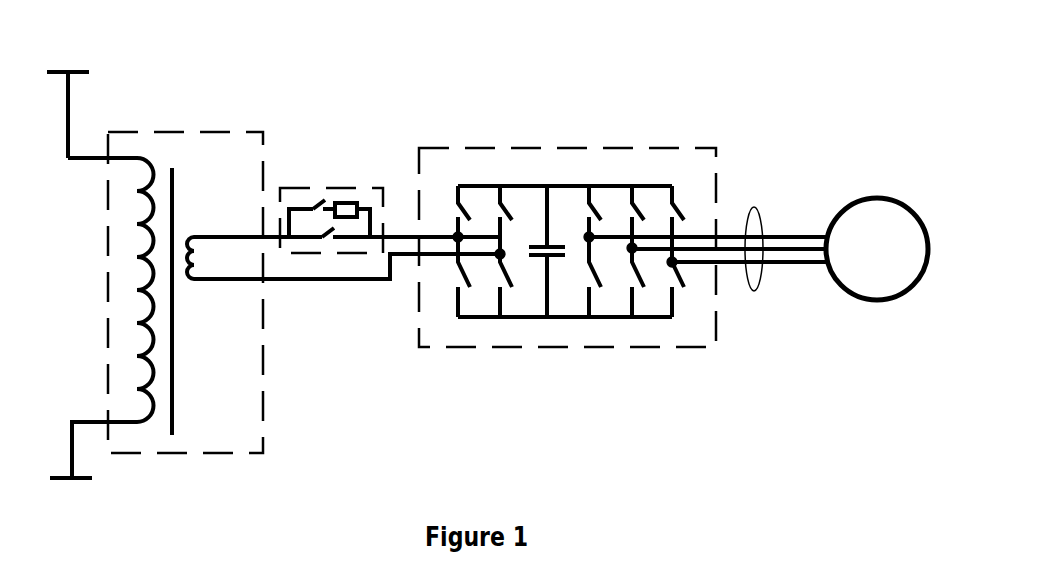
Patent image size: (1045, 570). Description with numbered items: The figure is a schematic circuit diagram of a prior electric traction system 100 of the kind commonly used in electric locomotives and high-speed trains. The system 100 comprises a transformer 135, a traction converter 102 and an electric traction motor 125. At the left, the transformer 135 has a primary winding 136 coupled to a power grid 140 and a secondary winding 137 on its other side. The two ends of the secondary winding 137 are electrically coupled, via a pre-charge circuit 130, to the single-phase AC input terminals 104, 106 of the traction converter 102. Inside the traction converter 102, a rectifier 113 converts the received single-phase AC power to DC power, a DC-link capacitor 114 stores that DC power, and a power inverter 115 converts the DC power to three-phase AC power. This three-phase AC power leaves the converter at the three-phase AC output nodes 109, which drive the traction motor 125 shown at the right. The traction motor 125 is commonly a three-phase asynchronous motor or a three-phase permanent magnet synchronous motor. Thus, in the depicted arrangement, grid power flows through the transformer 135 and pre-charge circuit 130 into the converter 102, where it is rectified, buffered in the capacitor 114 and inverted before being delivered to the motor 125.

The electric traction system 100 is at (797, 77).
The traction converter 102 is at (567, 241).
The single-phase AC input terminal 104 is at (404, 232).
The single-phase AC input terminal 106 is at (404, 262).
The three-phase AC output nodes 109 is at (759, 207).
The rectifier 113 is at (455, 333).
The DC-link capacitor 114 is at (552, 257).
The power inverter 115 is at (578, 333).
The traction motor 125 is at (862, 198).
The pre-charge circuit 130 is at (306, 189).
The transformer 135 is at (175, 269).
The primary winding 136 is at (140, 326).
The secondary winding 137 is at (193, 258).
The power grid 140 is at (60, 69).